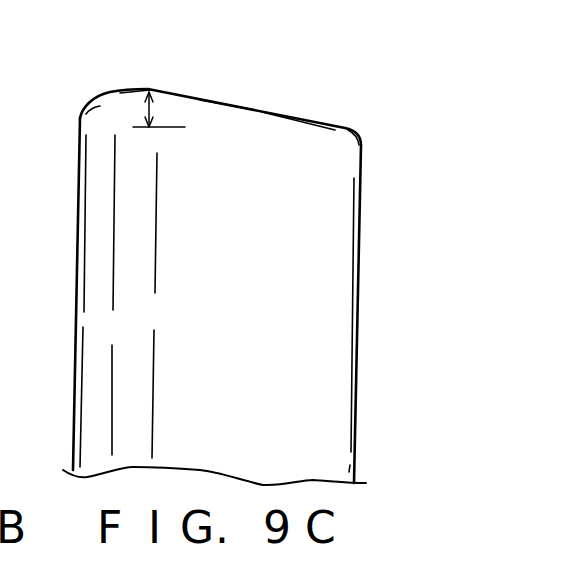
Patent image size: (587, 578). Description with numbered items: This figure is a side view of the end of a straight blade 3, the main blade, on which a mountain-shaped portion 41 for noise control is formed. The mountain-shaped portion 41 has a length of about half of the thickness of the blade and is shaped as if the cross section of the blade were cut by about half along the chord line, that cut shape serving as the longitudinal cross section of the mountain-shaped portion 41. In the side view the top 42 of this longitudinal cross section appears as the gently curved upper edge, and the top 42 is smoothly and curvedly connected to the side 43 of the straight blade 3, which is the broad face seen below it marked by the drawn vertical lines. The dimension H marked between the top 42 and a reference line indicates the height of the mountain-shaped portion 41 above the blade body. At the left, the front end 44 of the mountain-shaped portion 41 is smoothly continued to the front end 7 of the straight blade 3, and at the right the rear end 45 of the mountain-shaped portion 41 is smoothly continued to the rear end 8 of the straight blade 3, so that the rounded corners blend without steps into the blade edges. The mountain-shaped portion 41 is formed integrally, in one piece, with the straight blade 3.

The straight blade 3 is at (364, 357).
The front end 7 is at (78, 272).
The rear end 8 is at (360, 215).
The mountain-shaped portion 41 is at (200, 108).
The top 42 is at (130, 90).
The side 43 is at (318, 288).
The front end 44 is at (80, 115).
The rear end 45 is at (362, 143).
The height of top edge H is at (159, 113).